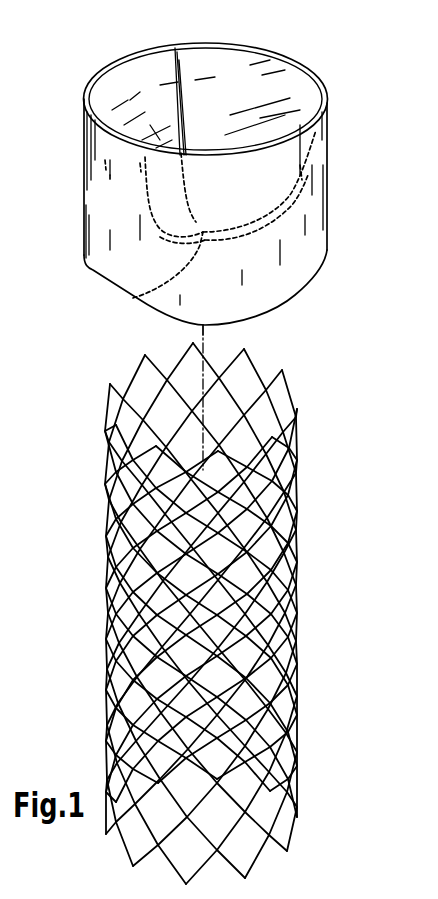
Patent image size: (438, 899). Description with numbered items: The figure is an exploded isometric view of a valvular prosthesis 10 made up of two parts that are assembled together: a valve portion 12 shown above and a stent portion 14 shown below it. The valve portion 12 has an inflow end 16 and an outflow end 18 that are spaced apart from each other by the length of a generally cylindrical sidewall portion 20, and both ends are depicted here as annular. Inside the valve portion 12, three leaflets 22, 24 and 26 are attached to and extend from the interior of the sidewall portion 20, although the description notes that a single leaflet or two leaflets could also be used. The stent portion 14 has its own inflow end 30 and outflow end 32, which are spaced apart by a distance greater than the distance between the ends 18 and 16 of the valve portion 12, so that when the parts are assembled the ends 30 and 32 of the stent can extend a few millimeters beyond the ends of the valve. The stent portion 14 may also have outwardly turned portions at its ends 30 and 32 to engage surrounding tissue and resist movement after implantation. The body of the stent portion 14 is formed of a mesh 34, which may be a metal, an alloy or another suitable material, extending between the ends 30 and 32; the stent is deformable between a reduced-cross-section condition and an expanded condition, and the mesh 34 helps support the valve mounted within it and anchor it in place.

The valvular prosthesis 10 is at (358, 68).
The valve portion 12 is at (340, 170).
The stent portion 14 is at (305, 595).
The inflow end 16 is at (287, 303).
The outflow end 18 is at (314, 78).
The sidewall portion 20 is at (310, 195).
The leaflet 22 is at (148, 105).
The leaflet 24 is at (233, 97).
The leaflet 26 is at (133, 298).
The inflow end 30 is at (288, 376).
The outflow end 32 is at (292, 832).
The mesh 34 is at (226, 662).